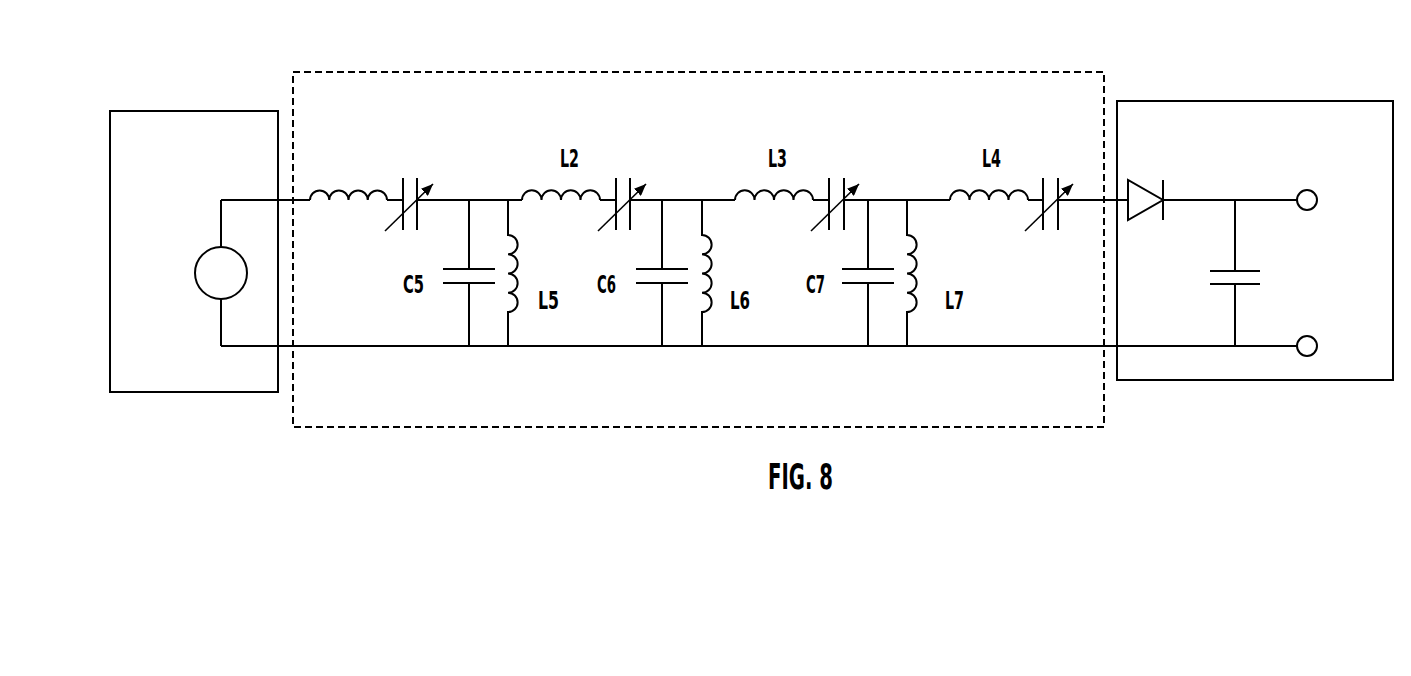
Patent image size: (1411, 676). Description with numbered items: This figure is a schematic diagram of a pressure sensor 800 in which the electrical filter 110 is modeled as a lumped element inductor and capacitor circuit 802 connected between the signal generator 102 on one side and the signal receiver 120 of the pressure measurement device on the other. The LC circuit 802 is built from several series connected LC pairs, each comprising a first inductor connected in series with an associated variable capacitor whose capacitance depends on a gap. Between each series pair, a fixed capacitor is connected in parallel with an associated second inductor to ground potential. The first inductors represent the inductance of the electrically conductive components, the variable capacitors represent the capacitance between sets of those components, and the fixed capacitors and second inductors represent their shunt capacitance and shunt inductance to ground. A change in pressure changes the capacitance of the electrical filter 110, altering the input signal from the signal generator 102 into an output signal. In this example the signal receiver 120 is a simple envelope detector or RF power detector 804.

The signal generator 102 is at (195, 111).
The electrical filter 110 is at (619, 69).
The pressure sensor 800 is at (813, 71).
The inductor and capacitor (LC) circuit 802 is at (964, 95).
The signal receiver 120 is at (1255, 223).
The RF power detector 804 is at (1257, 175).